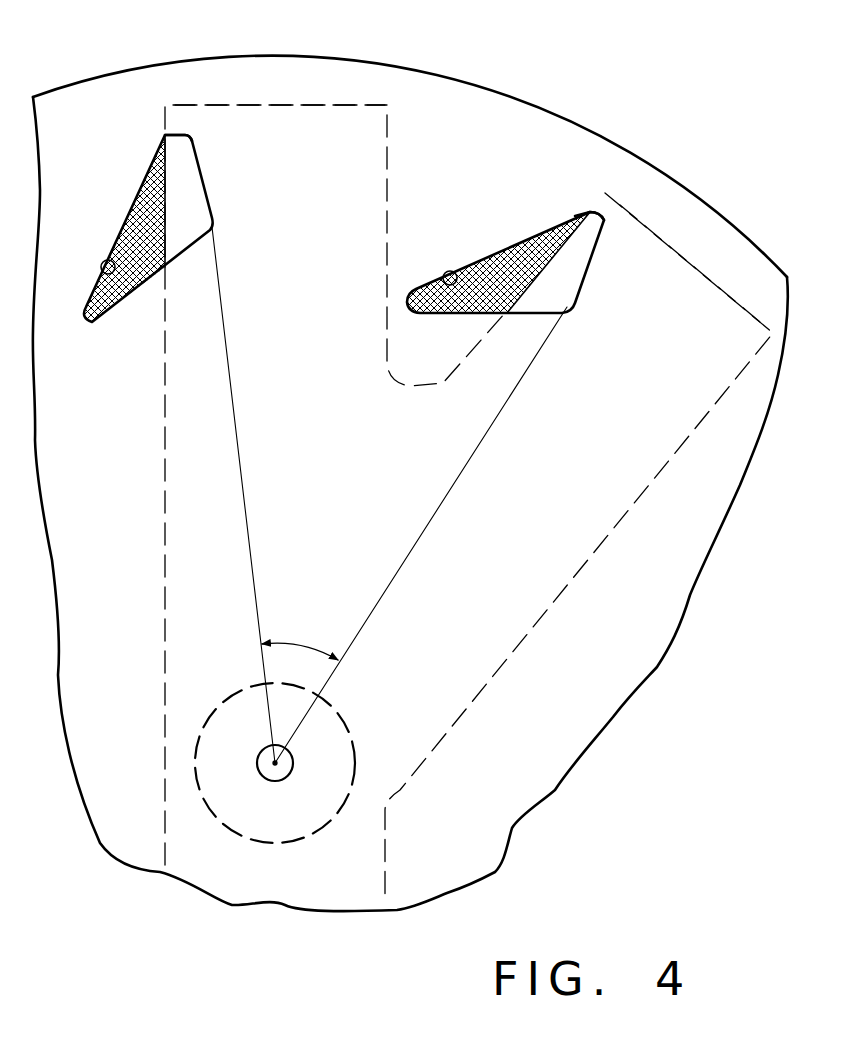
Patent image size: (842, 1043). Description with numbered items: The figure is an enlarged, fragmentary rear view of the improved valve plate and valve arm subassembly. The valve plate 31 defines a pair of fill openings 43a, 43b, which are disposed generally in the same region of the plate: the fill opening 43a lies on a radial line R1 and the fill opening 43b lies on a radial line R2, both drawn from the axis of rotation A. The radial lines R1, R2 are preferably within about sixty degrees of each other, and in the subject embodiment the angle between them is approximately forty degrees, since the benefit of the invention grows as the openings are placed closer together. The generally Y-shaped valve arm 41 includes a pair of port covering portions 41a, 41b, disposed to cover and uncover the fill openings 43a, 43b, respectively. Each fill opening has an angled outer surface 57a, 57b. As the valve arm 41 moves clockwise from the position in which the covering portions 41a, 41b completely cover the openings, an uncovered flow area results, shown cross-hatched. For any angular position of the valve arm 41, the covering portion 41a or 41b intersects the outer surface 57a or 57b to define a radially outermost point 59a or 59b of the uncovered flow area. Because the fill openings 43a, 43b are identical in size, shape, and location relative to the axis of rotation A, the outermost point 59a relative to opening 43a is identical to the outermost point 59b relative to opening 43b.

The valve plate 31 is at (170, 60).
The valve arm 41 is at (160, 456).
The port covering portion 41a is at (323, 130).
The port covering portion 41b is at (683, 290).
The fill opening 43a is at (105, 215).
The fill opening 43b is at (486, 243).
The angled outer surface 57a is at (101, 277).
The angled outer surface 57b is at (443, 278).
The radially outermost point 59a is at (165, 135).
The radially outermost point 59b is at (590, 212).
The axis of rotation A is at (260, 767).
The radial line R1 is at (243, 495).
The radial line R2 is at (421, 535).